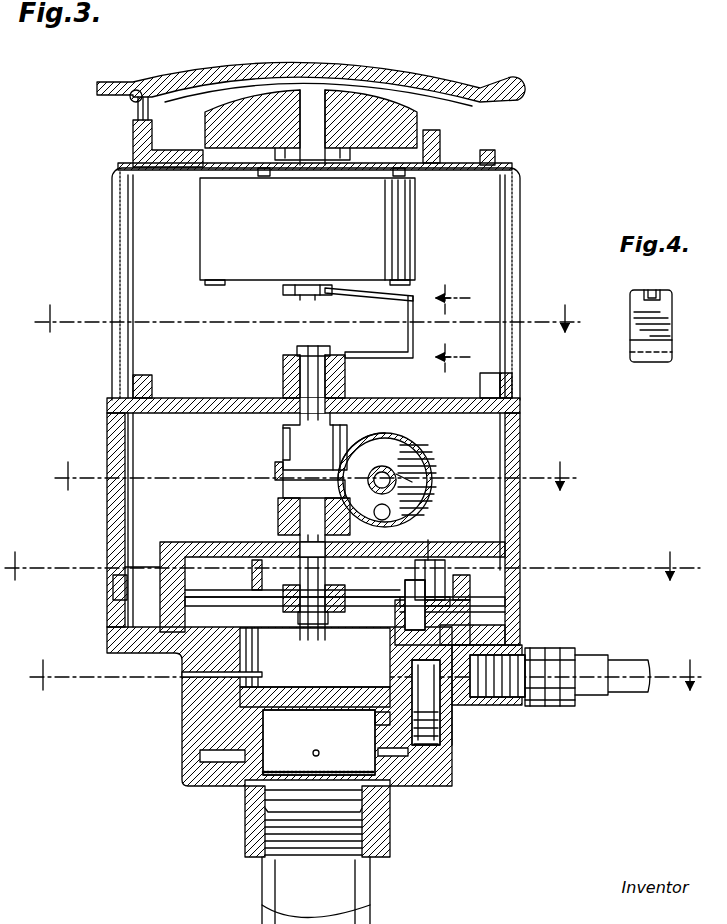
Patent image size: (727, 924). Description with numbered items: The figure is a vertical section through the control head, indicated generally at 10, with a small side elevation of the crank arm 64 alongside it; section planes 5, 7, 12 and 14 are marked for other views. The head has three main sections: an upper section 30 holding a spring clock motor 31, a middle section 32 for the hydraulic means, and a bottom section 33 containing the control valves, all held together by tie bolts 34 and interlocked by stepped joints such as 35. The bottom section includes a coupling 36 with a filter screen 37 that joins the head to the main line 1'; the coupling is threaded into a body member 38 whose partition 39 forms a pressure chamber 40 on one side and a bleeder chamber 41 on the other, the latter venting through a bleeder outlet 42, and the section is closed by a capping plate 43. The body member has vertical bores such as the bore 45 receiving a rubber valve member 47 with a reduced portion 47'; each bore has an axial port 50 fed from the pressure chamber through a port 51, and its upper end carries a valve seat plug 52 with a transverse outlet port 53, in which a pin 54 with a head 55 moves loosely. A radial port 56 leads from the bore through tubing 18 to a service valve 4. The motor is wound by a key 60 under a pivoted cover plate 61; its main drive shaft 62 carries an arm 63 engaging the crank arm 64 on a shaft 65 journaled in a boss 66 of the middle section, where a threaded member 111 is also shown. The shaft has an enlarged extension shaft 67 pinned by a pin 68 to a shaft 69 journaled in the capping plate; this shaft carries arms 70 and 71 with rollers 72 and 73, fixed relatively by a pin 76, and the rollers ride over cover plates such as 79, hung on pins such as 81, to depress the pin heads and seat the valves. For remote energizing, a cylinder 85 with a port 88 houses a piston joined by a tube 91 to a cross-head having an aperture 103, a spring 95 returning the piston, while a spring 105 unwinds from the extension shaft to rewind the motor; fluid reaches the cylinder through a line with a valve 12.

In FIG. 3, the main line 1' is at (289, 890).
In FIG. 3, the service valve 4 is at (453, 318).
In FIG. 3, the section line 5- 5 is at (307, 314).
In FIG. 3, the section line 7- 7 is at (317, 466).
In FIG. 3, the regulator assembly 10 is at (100, 240).
In FIG. 3, the valve 12 is at (352, 560).
In FIG. 3, the section line 14- 14 is at (367, 668).
In FIG. 3, the tubing 18 is at (620, 665).
In FIG. 3, the upper section 30 is at (520, 238).
In FIG. 3, the spring clock motor 31 is at (307, 231).
In FIG. 3, the middle section 32 is at (522, 448).
In FIG. 3, the bottom section 33 is at (182, 722).
In FIG. 3, the tie bolts 34 is at (505, 290).
In FIG. 3, the stepped joint 35 is at (115, 590).
In FIG. 3, the coupling 36 is at (250, 825).
In FIG. 3, the filter screen 37 is at (297, 772).
In FIG. 3, the body member 38 is at (200, 754).
In FIG. 3, the partition 39 is at (318, 695).
In FIG. 3, the pressure chamber 40 is at (319, 742).
In FIG. 3, the bleeder chamber 41 is at (315, 657).
In FIG. 3, the bleeder outlet 42 is at (200, 676).
In FIG. 3, the capping plate 43 is at (173, 548).
In FIG. 3, the vertical bore 45 is at (385, 720).
In FIG. 3, the valve member 47 is at (401, 701).
In FIG. 3, the stepped portion 47' is at (467, 733).
In FIG. 3, the axial port 50 is at (424, 745).
In FIG. 3, the port 51 is at (390, 752).
In FIG. 3, the valve seat plug 52 is at (462, 628).
In FIG. 3, the transverse outlet port 53 is at (400, 625).
In FIG. 3, the pin 54 is at (460, 615).
In FIG. 3, the head 55 is at (460, 600).
In FIG. 3, the radial port 56 is at (478, 712).
In FIG. 3, the key 60 is at (372, 100).
In FIG. 3, the pivoted cover plate 61 is at (291, 62).
In FIG. 3, the main drive shaft 62 is at (310, 300).
In FIG. 3, the arm 63 is at (372, 297).
In FIG. 4, the arm 63 is at (658, 296).
In FIG. 3, the crank arm 64 is at (385, 358).
In FIG. 4, the crank arm 64 is at (653, 350).
In FIG. 3, the shaft 65 is at (300, 350).
In FIG. 3, the boss 66 is at (283, 380).
In FIG. 3, the extension shaft 67 is at (290, 441).
In FIG. 3, the pin 68 is at (336, 498).
In FIG. 3, the shaft 69 is at (290, 548).
In FIG. 3, the arm 70 is at (262, 590).
In FIG. 3, the arm 71 is at (365, 590).
In FIG. 3, the roller 72 is at (255, 560).
In FIG. 3, the roller 73 is at (422, 580).
In FIG. 3, the pin 76 is at (336, 612).
In FIG. 3, the cover plate 79 is at (428, 592).
In FIG. 3, the pin 81 is at (470, 580).
In FIG. 3, the cylinder 85 is at (400, 462).
In FIG. 3, the port 88 is at (362, 428).
In FIG. 3, the tube 91 is at (392, 464).
In FIG. 3, the spring 95 is at (405, 478).
In FIG. 3, the aperture 103 is at (386, 512).
In FIG. 3, the spring 105 is at (275, 472).
In FIG. 3, the screw 111 is at (322, 364).